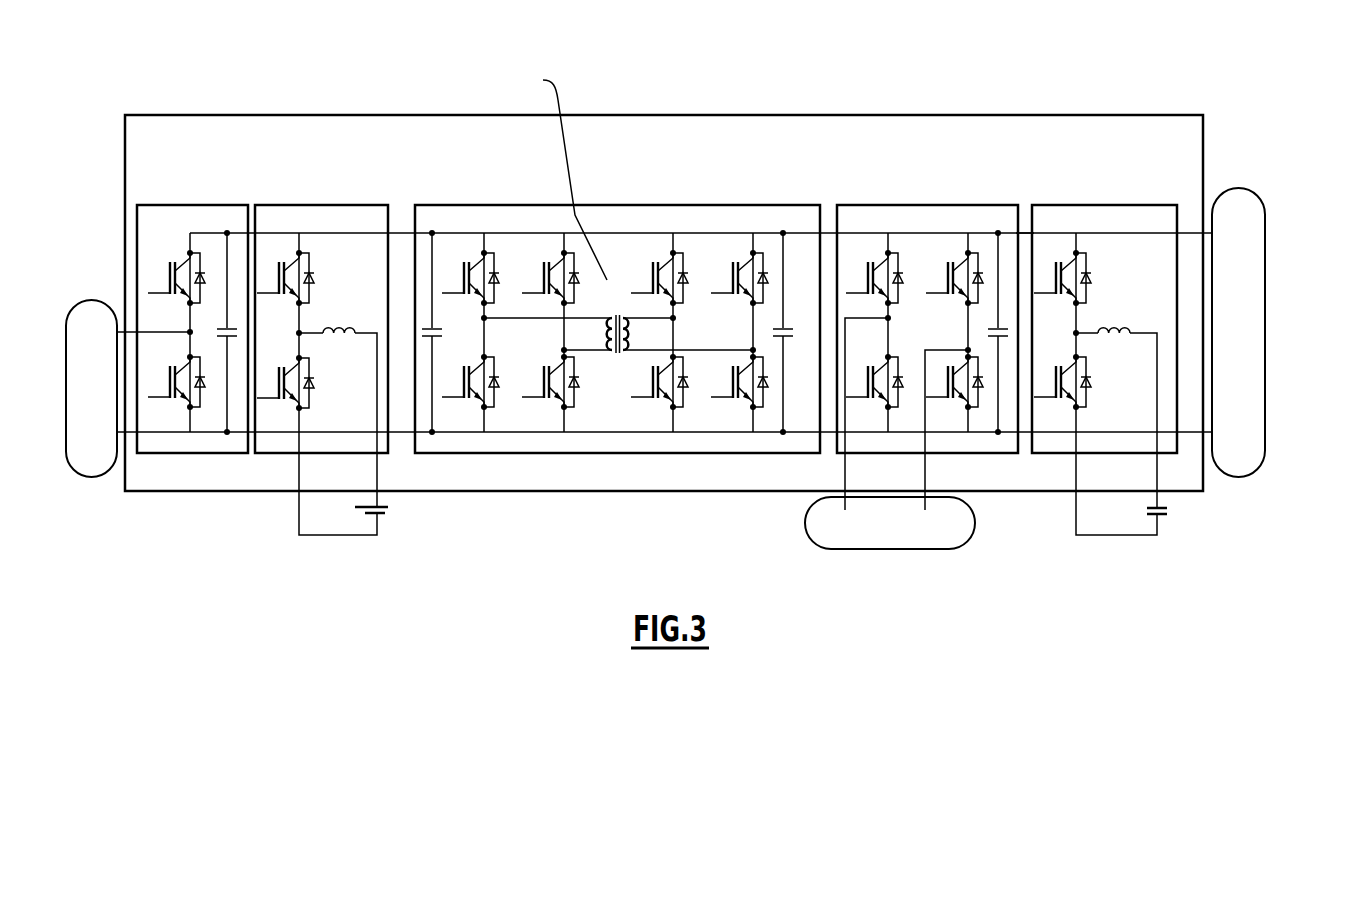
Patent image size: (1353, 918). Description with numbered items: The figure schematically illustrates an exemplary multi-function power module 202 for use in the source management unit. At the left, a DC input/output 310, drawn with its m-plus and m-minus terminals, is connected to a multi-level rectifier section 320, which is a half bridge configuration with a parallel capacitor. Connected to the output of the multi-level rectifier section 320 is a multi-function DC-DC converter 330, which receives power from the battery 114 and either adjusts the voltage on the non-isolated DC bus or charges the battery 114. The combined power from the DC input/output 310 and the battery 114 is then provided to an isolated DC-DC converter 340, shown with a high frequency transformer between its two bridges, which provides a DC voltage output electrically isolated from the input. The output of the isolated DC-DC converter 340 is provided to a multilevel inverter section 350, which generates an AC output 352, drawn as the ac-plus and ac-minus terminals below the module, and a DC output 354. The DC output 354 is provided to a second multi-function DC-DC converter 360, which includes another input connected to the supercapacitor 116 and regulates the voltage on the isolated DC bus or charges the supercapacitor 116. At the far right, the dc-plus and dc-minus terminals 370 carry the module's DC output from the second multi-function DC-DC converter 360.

The multi-function power module 202 is at (142, 98).
The DC input/output 310 is at (93, 300).
The multi-level rectifier section 320 is at (200, 454).
The multi-function DC-DC converter 330 is at (390, 210).
The battery 114 is at (397, 510).
The isolated DC-DC converter 340 is at (740, 205).
The multilevel inverter section 350 is at (962, 453).
The AC output 352 is at (814, 547).
The DC output 354 is at (1025, 233).
The second multi-function DC-DC converter 360 is at (1173, 205).
The supercapacitor 116 is at (1163, 514).
The DC output terminals dc+ / dc- 370 is at (1265, 275).